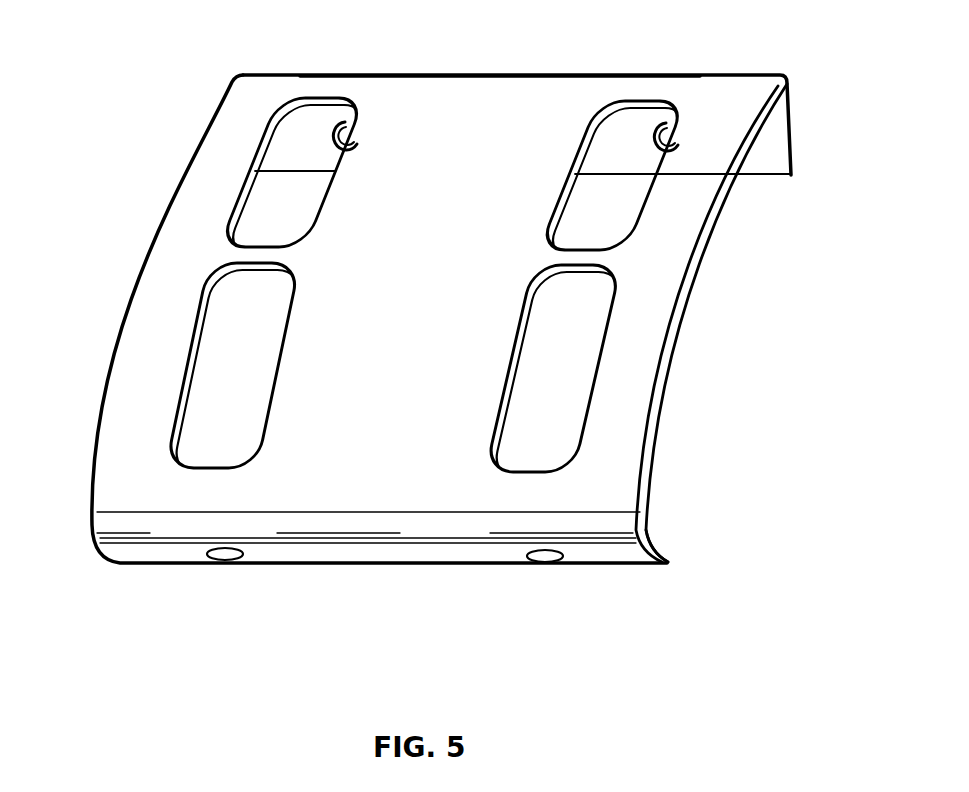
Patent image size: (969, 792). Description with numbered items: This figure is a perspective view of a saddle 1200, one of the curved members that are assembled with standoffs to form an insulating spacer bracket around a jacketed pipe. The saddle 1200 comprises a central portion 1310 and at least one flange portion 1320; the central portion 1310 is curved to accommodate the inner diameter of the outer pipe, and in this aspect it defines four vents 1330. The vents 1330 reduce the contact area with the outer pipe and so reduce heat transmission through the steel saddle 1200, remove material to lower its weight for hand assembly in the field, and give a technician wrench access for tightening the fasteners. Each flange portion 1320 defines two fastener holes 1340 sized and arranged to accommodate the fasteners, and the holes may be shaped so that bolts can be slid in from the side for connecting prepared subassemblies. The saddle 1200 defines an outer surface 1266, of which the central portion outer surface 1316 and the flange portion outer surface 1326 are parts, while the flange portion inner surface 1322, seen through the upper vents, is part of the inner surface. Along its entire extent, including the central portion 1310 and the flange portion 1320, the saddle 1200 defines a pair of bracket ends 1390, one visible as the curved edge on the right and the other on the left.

The saddle 1200 is at (497, 597).
The outer surface 1266 is at (500, 122).
The central portion 1310 is at (620, 500).
The central portion outer surface 1316 is at (430, 320).
The flange portion 1320 is at (776, 158).
The flange portion inner surface 1322 is at (647, 165).
The flange portion outer surface 1326 is at (620, 564).
The vent 1330 is at (312, 222).
The fastener hole 1340 is at (343, 117).
The bracket end 1390 is at (127, 320).